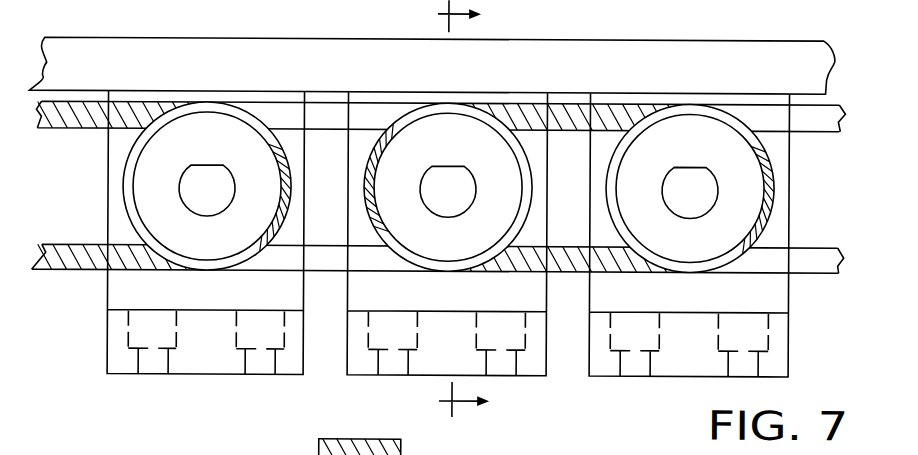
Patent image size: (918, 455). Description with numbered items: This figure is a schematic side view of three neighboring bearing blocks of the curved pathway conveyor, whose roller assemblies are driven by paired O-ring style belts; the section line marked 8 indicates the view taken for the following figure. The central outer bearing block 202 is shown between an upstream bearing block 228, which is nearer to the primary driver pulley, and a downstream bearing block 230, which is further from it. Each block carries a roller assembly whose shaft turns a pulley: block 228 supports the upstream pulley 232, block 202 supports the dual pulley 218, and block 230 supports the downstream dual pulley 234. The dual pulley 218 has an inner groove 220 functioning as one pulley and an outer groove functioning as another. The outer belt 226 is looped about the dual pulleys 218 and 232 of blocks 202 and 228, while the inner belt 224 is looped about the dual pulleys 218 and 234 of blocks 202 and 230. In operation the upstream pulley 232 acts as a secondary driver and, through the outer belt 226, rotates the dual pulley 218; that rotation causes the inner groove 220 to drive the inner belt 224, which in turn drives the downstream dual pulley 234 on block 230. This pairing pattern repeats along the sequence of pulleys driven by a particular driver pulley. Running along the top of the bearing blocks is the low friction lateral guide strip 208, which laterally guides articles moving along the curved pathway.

The lateral guide strip 208 is at (260, 61).
The upstream pulley 232 is at (150, 189).
The dual pulley 218 is at (443, 240).
The downstream dual pulley 234 is at (743, 179).
The outer belt 226 is at (294, 258).
The inner belt 224 is at (599, 260).
The bearing block 228 is at (126, 293).
The outer bearing block 202 is at (528, 359).
The bearing block 230 is at (772, 298).
The inner groove 220 is at (329, 447).
The section line 8- 8 is at (470, 208).